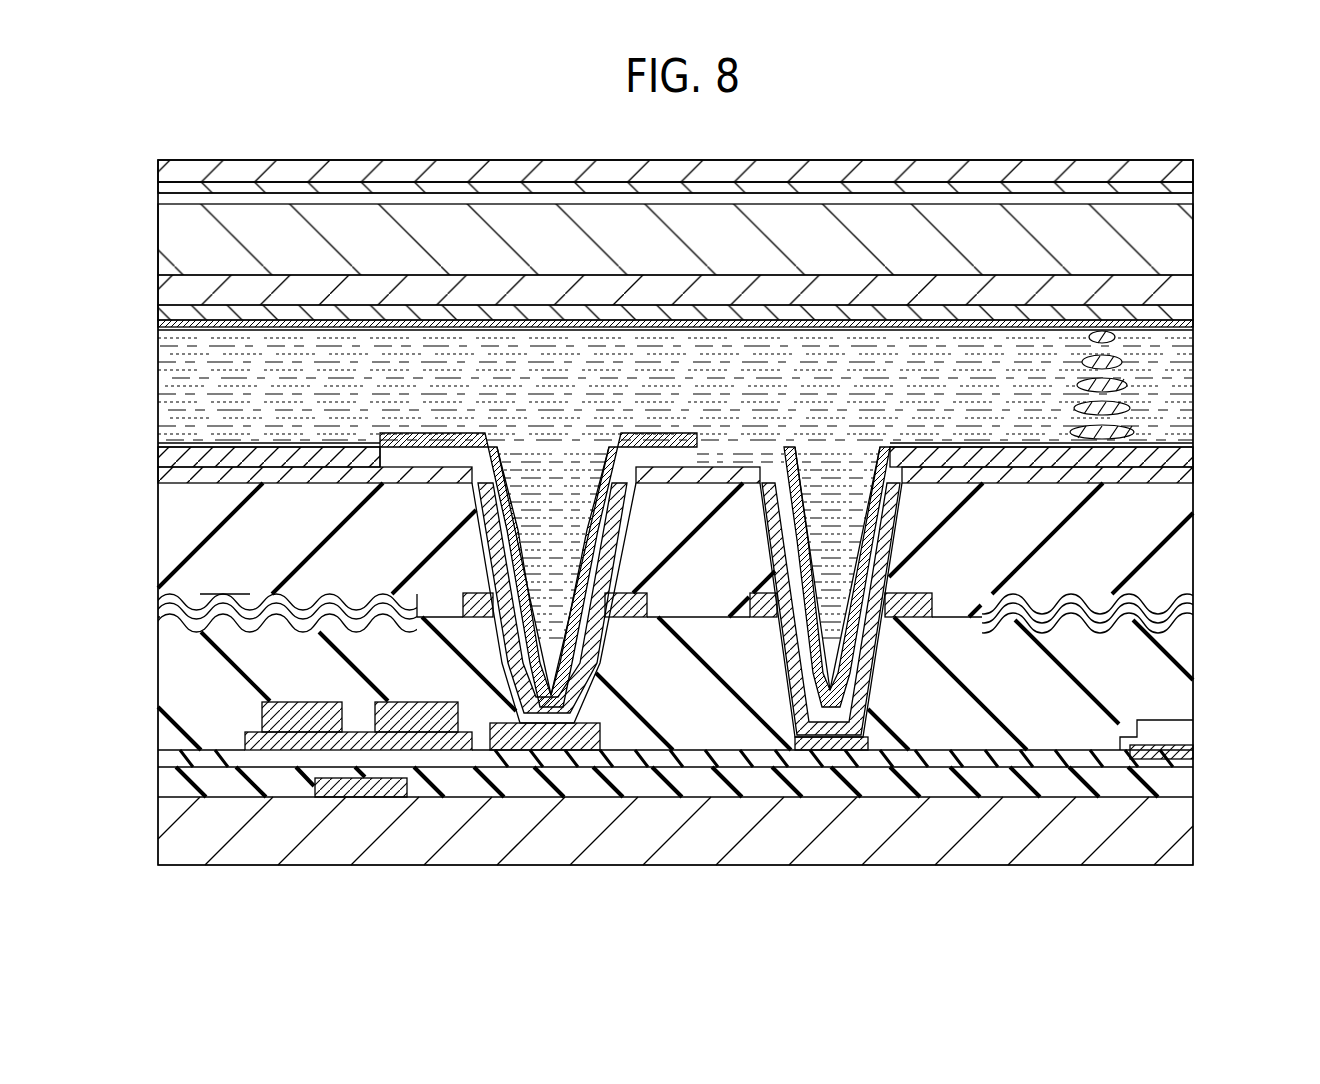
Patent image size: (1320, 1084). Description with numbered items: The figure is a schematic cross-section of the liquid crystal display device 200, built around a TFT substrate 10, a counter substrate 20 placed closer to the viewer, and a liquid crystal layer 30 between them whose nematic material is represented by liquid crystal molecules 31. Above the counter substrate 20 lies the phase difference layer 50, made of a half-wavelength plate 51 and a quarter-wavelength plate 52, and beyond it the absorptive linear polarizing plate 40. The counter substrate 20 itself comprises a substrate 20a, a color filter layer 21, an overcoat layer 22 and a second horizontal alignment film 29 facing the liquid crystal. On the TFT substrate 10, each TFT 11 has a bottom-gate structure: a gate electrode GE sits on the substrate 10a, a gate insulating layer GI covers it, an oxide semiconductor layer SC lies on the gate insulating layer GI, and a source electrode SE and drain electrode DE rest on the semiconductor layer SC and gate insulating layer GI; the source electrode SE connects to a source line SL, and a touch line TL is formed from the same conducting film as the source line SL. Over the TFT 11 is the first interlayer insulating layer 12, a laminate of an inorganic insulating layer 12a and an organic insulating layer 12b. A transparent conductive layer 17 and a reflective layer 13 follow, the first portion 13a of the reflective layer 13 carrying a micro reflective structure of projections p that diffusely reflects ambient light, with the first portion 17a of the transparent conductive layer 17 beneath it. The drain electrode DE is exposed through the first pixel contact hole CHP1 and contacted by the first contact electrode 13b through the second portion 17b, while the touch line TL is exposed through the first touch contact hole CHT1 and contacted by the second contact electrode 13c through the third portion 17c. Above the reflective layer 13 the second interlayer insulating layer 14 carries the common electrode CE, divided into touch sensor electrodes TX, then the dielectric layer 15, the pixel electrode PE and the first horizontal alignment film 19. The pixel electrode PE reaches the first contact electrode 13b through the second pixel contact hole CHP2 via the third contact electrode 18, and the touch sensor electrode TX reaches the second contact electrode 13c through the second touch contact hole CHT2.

The liquid crystal display device 200 is at (1222, 134).
The polarizing plate 40 is at (158, 183).
The phase difference layer 50 is at (725, 179).
The half-wavelength plate 51 is at (1196, 182).
The quarter-wavelength plate 52 is at (1196, 193).
The counter substrate 20 is at (678, 273).
The substrate 20a is at (1188, 243).
The color filter layer 21 is at (1188, 290).
The overcoat layer 22 is at (1188, 315).
The second horizontal alignment film 29 is at (1190, 327).
The liquid crystal layer 30 is at (672, 385).
The liquid crystal molecule 31 is at (1130, 385).
The first horizontal alignment film 19 is at (1190, 446).
The dielectric layer 15 is at (1188, 475).
The second interlayer insulating layer 14 is at (1188, 552).
The reflective layer 13 is at (666, 704).
The first portion of the reflective layer 13a is at (250, 608).
The first contact electrode 13b is at (483, 593).
The second contact electrode 13c is at (760, 605).
The transparent conductive layer 17 is at (666, 704).
The first portion of the transparent conductive layer 17a is at (223, 612).
The second portion of the transparent conductive layer 17b is at (488, 700).
The third portion of the transparent conductive layer 17c is at (768, 640).
The pixel electrode PE is at (432, 433).
The common electrode CE is at (675, 433).
The touch sensor electrode TX is at (275, 470).
The first pixel contact hole CHP1 is at (556, 522).
The second pixel contact hole CHP2 is at (549, 675).
The first touch contact hole CHT1 is at (840, 512).
The second touch contact hole CHT2 is at (832, 668).
The touch line TL is at (832, 752).
The first interlayer insulating layer 12 is at (732, 707).
The inorganic insulating layer 12a is at (1150, 725).
The organic insulating layer 12b is at (1165, 667).
The source line SL is at (1165, 752).
The TFT 11 is at (401, 808).
The gate insulating layer GI is at (377, 760).
The semiconductor layer SC is at (350, 742).
The source electrode SE is at (283, 745).
The gate electrode GE is at (357, 792).
The drain electrode DE is at (562, 742).
The third contact electrode 18 is at (625, 690).
The projection p is at (224, 590).
The TFT substrate 10 is at (702, 655).
The substrate 10a is at (1188, 838).